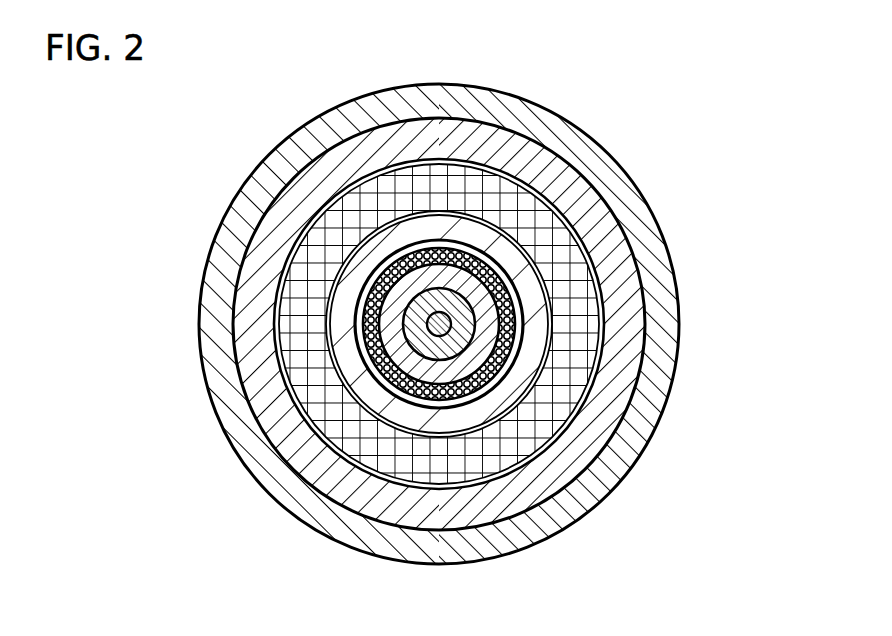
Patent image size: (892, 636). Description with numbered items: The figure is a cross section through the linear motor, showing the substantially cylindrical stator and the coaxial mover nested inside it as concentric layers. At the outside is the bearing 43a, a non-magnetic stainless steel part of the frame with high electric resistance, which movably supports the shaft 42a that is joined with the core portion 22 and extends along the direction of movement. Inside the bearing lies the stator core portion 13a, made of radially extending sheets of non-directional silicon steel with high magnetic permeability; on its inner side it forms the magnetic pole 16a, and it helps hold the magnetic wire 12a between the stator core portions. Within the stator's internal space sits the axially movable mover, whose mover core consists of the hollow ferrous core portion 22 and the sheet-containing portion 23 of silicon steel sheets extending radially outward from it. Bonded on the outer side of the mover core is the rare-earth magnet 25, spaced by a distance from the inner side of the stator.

The bearing 43a is at (490, 112).
The stator core portion 13a is at (573, 187).
The magnetic wire 12a is at (560, 257).
The magnetic pole 16a is at (530, 295).
The sheet-containing portion 23 is at (500, 355).
The core portion 22 is at (456, 348).
The magnet 25 is at (453, 342).
The shaft 42a is at (430, 332).